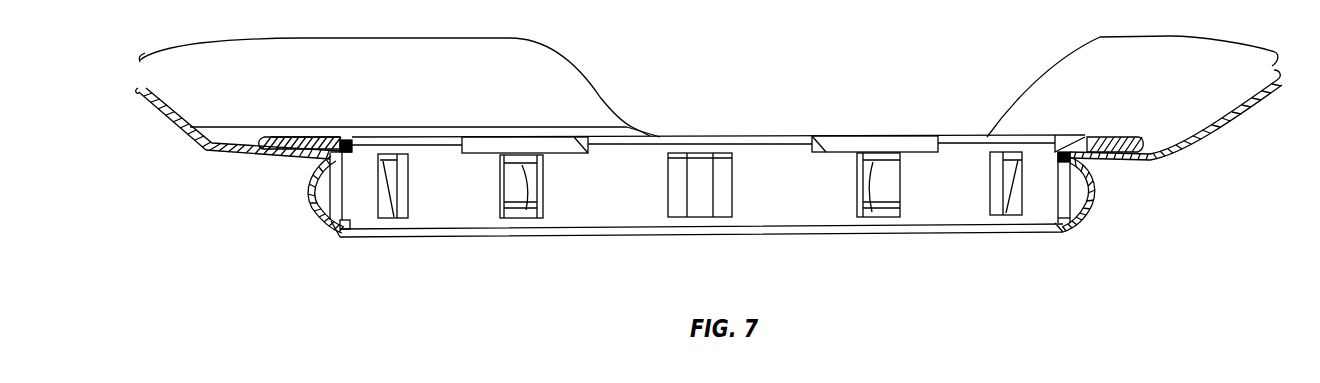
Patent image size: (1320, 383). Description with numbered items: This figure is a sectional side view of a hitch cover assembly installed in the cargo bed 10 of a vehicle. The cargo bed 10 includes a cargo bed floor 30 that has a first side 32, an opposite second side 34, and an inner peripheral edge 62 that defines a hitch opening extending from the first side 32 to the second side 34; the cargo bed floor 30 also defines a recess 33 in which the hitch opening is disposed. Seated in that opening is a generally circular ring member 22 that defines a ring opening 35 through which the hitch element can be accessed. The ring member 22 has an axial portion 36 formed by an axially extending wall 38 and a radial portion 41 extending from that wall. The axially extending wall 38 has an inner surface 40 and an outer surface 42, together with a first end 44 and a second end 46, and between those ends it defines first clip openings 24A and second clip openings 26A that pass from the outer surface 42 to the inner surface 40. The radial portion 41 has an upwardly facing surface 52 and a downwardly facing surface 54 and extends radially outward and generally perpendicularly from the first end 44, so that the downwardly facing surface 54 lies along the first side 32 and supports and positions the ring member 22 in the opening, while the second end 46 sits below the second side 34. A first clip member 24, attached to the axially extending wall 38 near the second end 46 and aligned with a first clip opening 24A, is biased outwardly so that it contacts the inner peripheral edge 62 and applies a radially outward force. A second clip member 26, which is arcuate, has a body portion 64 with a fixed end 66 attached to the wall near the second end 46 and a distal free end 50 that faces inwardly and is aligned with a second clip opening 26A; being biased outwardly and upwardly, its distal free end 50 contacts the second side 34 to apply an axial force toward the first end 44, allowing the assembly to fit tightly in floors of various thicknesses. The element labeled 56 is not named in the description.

The cargo bed 10 is at (1197, 143).
The ring member 22 is at (793, 130).
The first clip member 24 is at (408, 172).
The first clip opening 24A is at (410, 202).
The second clip member 26 is at (317, 221).
The second clip opening 26A is at (343, 194).
The cargo bed floor 30 is at (212, 158).
The first side 32 is at (176, 118).
The recess 33 is at (1180, 140).
The second side 34 is at (262, 162).
The ring opening 35 is at (634, 150).
The axial portion 36 is at (654, 152).
The axially extending wall 38 is at (350, 163).
The inner surface 40 is at (1064, 187).
The radial portion 41 is at (296, 137).
The outer surface 42 is at (1089, 137).
The first end 44 is at (970, 134).
The second end 46 is at (992, 238).
The distal free end 50 is at (344, 144).
The upwardly facing surface 52 is at (270, 137).
The downwardly facing surface 54 is at (294, 162).
The spacer block 56 is at (347, 136).
The inner peripheral edge 62 is at (327, 148).
The body portion 64 is at (312, 207).
The fixed end 66 is at (320, 221).